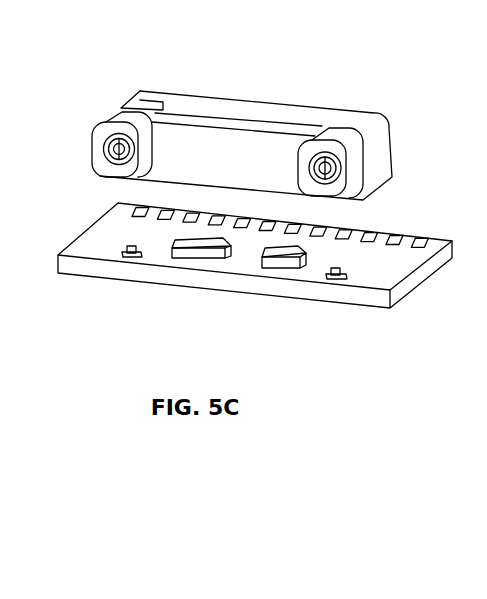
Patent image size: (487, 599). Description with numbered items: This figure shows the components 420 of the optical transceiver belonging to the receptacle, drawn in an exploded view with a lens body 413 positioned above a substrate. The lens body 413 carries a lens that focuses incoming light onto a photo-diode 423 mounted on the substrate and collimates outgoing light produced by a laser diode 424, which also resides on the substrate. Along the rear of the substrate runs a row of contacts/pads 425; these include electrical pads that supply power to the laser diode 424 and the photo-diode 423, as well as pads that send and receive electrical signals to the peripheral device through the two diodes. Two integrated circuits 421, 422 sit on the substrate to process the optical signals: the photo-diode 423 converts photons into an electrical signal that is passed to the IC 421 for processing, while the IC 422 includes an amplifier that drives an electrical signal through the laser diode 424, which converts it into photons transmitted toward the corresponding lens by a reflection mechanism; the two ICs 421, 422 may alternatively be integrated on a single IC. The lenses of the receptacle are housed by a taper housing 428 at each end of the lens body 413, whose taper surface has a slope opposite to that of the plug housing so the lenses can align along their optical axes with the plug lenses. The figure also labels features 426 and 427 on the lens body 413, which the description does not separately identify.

The components of the optical transceiver 420 is at (323, 18).
The lens body 413 is at (208, 97).
The integrated circuit 421 is at (210, 263).
The integrated circuit 422 is at (290, 268).
The photo-diode 423 is at (125, 262).
The laser diode 424 is at (347, 278).
The contacts/pads 425 is at (425, 232).
The right hinge knuckle 426 is at (333, 165).
The left hinge knuckle 427 is at (115, 142).
The taper housing 428 is at (106, 157).